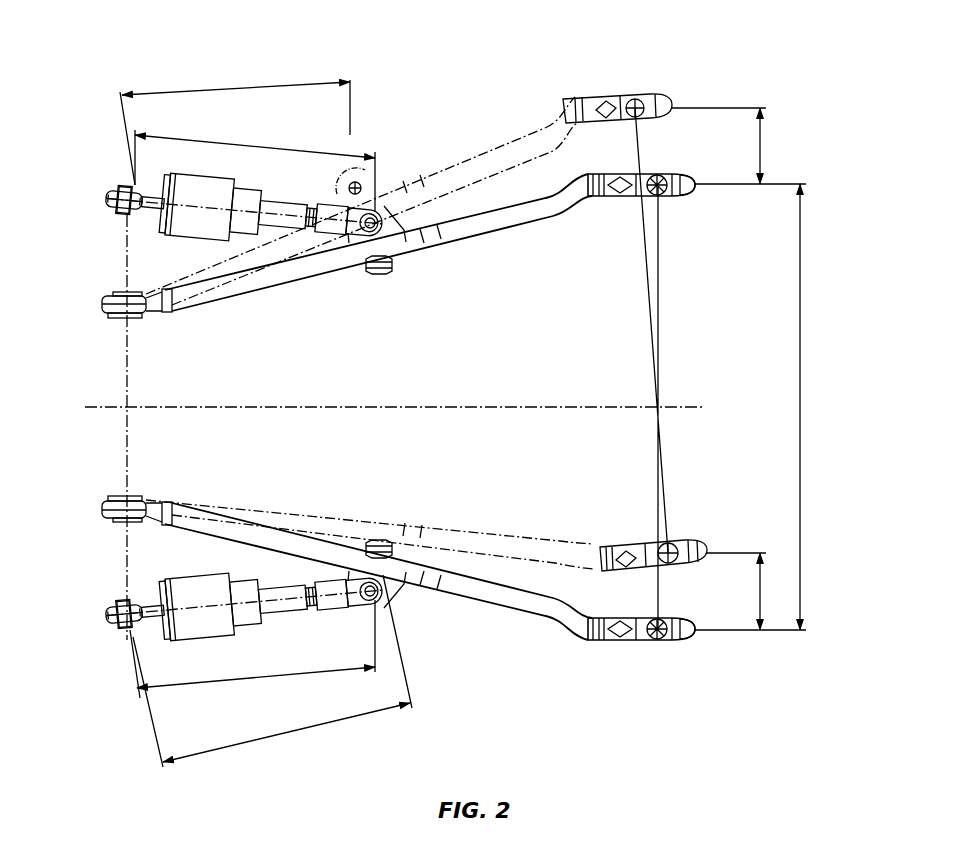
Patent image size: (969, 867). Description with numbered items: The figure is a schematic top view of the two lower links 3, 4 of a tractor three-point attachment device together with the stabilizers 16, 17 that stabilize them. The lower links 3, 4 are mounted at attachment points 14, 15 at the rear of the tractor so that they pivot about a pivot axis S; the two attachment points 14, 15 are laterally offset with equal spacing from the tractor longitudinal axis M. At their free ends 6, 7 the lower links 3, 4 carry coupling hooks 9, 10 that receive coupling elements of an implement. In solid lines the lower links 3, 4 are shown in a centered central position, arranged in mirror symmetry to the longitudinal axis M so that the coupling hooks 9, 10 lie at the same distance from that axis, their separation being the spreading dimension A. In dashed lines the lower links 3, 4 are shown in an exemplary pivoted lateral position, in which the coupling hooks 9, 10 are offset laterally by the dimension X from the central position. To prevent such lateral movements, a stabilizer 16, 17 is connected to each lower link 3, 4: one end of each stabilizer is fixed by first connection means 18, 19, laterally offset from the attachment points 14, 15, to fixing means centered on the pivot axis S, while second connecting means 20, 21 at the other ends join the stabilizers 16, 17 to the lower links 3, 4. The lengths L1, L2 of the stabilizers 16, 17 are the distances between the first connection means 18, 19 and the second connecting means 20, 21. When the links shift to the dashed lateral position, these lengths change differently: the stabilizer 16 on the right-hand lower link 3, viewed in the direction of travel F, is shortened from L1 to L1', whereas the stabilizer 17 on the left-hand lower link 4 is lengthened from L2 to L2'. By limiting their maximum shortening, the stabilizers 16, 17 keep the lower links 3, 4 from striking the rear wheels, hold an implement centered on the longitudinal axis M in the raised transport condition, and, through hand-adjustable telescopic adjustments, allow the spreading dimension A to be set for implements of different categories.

The lower link 3 is at (490, 224).
The lower link 4 is at (510, 593).
The free end 6 is at (706, 191).
The free end 7 is at (706, 635).
The coupling hook 9 is at (668, 197).
The coupling hook 10 is at (668, 642).
The attachment point 14 is at (130, 290).
The attachment point 15 is at (130, 494).
The stabilizer 16 is at (243, 247).
The stabilizer 17 is at (243, 565).
The first connection means 18 is at (130, 188).
The first connection means 19 is at (130, 596).
The second connecting means 20 is at (373, 216).
The second connecting means 21 is at (367, 597).
The spreading dimension A is at (800, 345).
The dimension X is at (755, 142).
The direction of travel F is at (32, 406).
The tractor longitudinal axis M is at (95, 406).
The pivot axis S is at (128, 360).
The length L1 is at (255, 159).
The length L1' is at (235, 109).
The length L2 is at (252, 667).
The length L2' is at (272, 685).